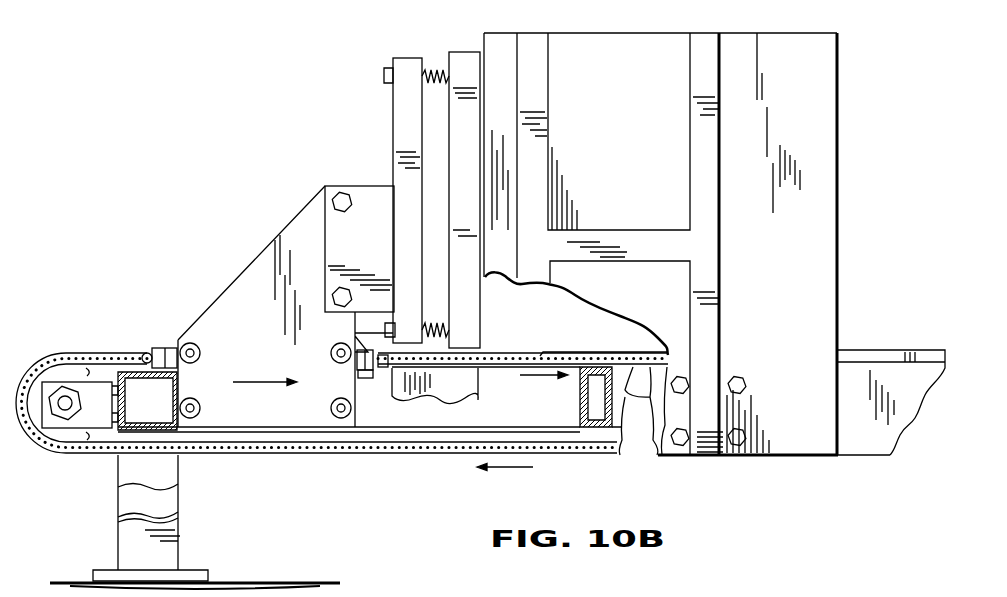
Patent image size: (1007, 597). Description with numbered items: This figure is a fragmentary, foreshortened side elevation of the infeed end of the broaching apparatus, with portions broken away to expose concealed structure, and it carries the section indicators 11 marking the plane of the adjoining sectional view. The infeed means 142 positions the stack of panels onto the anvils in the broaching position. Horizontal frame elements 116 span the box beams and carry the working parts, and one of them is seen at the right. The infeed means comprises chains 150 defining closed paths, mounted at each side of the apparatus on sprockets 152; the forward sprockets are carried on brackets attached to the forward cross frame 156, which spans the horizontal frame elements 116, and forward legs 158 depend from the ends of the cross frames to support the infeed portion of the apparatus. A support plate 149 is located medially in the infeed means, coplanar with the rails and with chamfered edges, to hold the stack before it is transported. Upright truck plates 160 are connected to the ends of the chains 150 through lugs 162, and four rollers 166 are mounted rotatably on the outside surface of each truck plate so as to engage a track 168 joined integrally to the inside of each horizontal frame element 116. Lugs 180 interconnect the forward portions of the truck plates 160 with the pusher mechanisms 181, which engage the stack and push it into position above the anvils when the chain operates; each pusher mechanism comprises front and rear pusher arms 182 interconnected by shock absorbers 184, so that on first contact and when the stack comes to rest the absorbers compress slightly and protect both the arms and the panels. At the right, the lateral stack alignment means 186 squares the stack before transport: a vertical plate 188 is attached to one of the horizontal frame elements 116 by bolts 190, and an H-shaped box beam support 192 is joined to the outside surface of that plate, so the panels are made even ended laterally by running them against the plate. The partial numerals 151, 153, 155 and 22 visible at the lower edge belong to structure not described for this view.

The section line 11- 11 is at (22, 28).
The frame member 116 is at (868, 443).
The conveyor assembly 142 is at (412, 472).
The guide bar 149 is at (566, 352).
The conveyor chain 150 is at (538, 443).
The end block 152 is at (63, 375).
The bracket 156 is at (120, 430).
The support post 158 is at (180, 537).
The mounting plate 160 is at (255, 278).
The chain guide block 162 is at (155, 350).
The roller 166 is at (186, 343).
The chain support bracket 168 is at (457, 383).
The bracket 180 is at (367, 200).
The spring biasing assembly 181 is at (377, 87).
The plate 182 is at (463, 58).
The spring 184 is at (437, 83).
The housing body 186 is at (847, 182).
The slot 188 is at (737, 50).
The bolt 190 is at (743, 437).
The bracket 192 is at (677, 200).
The conveyor 151 is at (622, 592).
The conveyor member 153 is at (773, 596).
The conveyor member 155 is at (858, 592).
The conveyor 22 is at (807, 585).